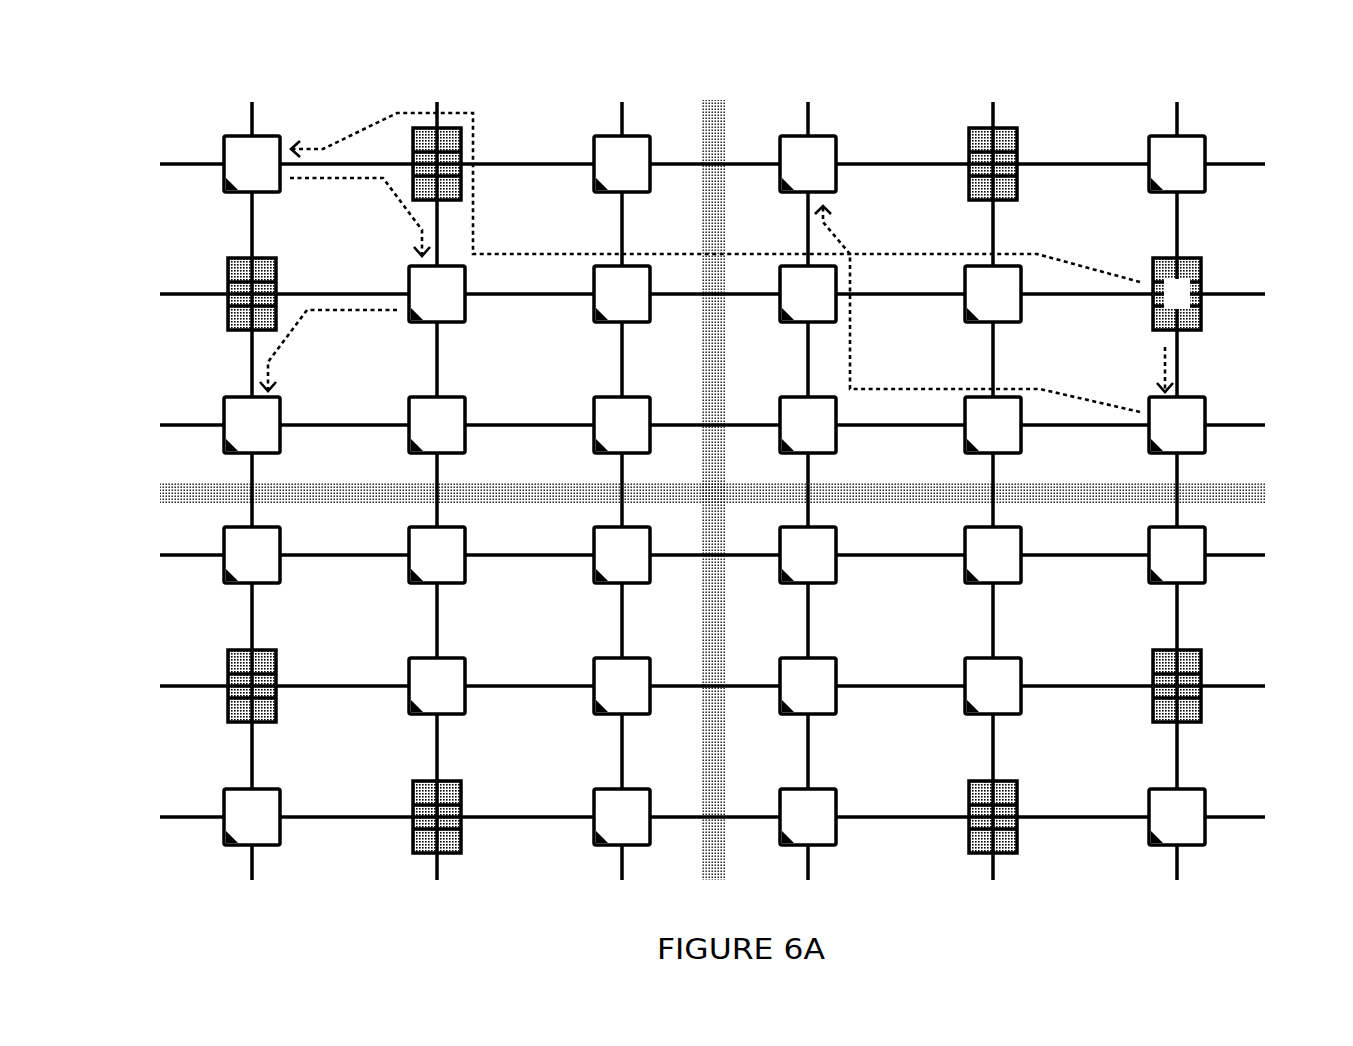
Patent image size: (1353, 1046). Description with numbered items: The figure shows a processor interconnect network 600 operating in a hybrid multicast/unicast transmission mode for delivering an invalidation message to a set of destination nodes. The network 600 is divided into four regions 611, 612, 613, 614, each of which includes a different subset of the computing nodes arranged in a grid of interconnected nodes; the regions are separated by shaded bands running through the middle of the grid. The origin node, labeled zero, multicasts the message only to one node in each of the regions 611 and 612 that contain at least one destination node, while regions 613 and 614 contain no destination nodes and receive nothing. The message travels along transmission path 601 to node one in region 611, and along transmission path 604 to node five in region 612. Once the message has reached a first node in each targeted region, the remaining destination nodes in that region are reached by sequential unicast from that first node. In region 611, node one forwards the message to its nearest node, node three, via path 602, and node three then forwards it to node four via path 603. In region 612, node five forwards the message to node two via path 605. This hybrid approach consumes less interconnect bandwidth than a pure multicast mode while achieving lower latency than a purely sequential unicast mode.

The processor interconnect network 600 is at (700, 464).
The transmission path 601 is at (1066, 257).
The path 602 is at (397, 205).
The path 603 is at (290, 341).
The transmission path 604 is at (1161, 360).
The path 605 is at (887, 389).
The region 611 is at (148, 117).
The region 612 is at (1258, 124).
The region 613 is at (147, 828).
The region 614 is at (1257, 838).